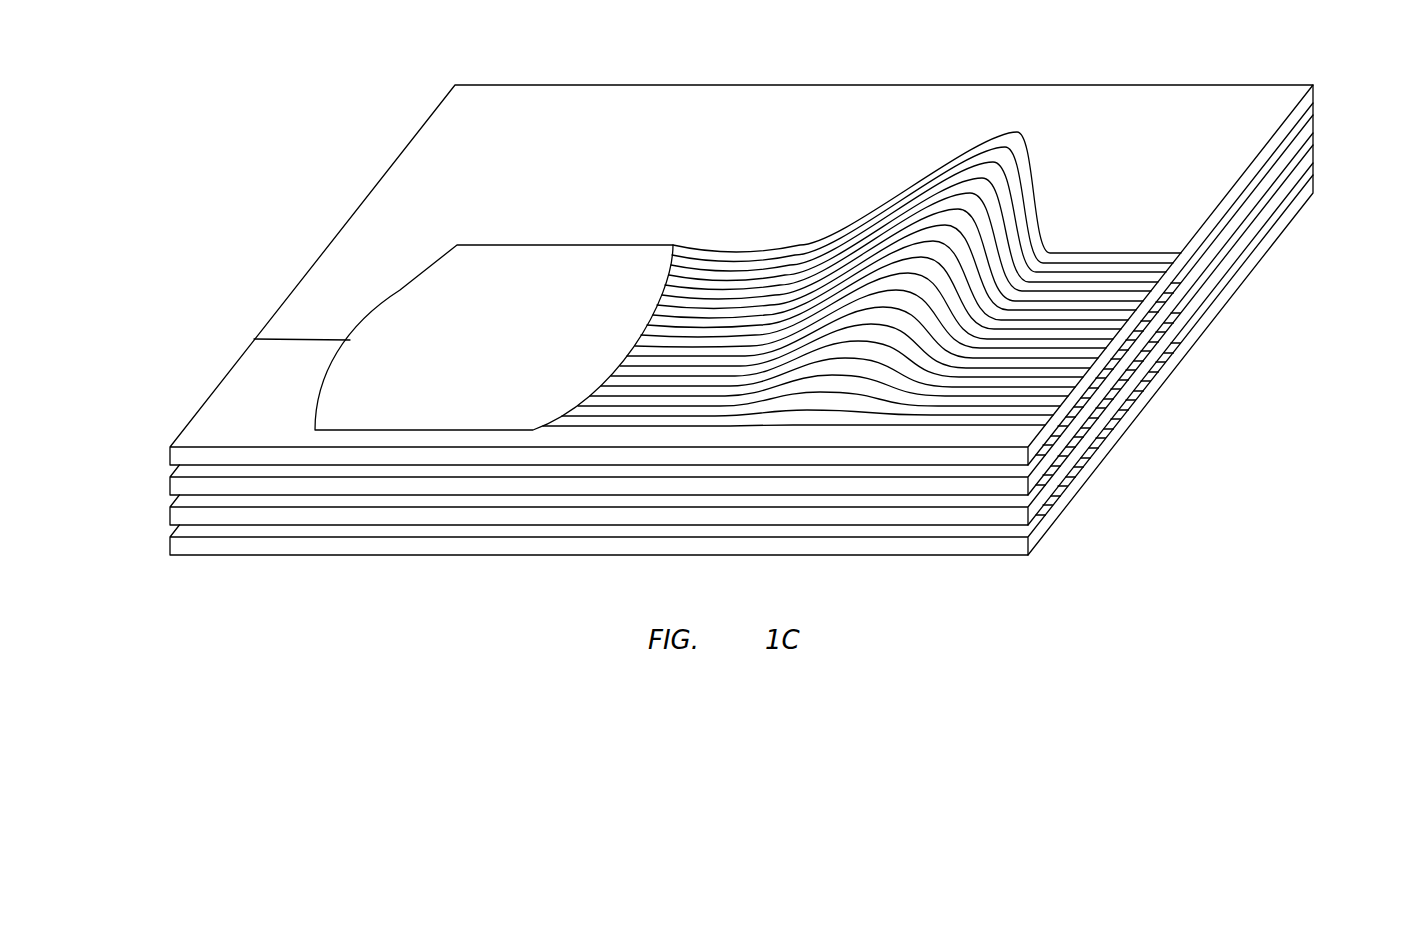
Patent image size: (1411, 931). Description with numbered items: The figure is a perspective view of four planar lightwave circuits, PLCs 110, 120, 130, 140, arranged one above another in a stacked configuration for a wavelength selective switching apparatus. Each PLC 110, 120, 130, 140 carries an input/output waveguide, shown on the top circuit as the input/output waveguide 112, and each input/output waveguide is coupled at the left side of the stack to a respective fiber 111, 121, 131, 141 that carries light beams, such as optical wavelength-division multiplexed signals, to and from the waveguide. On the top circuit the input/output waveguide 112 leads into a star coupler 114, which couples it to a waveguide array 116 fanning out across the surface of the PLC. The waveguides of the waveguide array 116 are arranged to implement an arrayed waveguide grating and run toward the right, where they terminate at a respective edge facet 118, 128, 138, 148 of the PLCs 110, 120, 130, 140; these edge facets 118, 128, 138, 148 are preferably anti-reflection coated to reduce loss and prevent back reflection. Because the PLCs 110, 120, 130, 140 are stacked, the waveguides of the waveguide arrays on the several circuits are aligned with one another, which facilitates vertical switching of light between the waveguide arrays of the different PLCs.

The PLC 110 is at (743, 262).
The PLC 120 is at (743, 292).
The PLC 130 is at (743, 322).
The PLC 140 is at (743, 353).
The fiber 111 is at (254, 339).
The fiber 121 is at (231, 369).
The fiber 131 is at (208, 399).
The fiber 141 is at (186, 426).
The input/output waveguide 112 is at (335, 338).
The star coupler 114 is at (568, 245).
The waveguide array 116 is at (1205, 153).
The edge facet 118 is at (1315, 95).
The edge facet 128 is at (1315, 125).
The edge facet 138 is at (1315, 155).
The edge facet 148 is at (1315, 187).